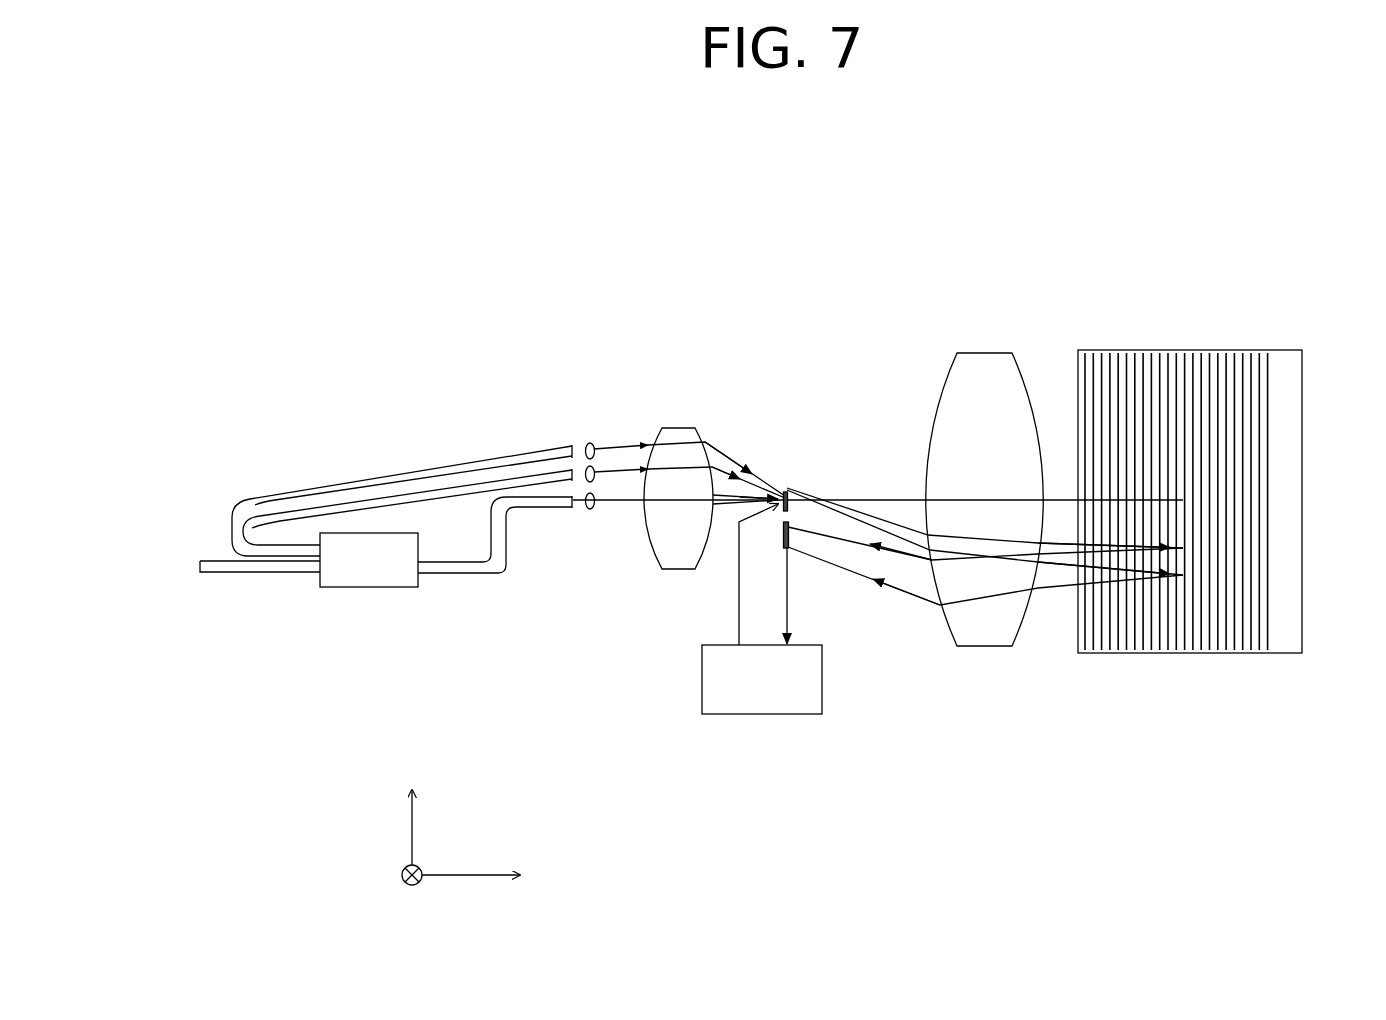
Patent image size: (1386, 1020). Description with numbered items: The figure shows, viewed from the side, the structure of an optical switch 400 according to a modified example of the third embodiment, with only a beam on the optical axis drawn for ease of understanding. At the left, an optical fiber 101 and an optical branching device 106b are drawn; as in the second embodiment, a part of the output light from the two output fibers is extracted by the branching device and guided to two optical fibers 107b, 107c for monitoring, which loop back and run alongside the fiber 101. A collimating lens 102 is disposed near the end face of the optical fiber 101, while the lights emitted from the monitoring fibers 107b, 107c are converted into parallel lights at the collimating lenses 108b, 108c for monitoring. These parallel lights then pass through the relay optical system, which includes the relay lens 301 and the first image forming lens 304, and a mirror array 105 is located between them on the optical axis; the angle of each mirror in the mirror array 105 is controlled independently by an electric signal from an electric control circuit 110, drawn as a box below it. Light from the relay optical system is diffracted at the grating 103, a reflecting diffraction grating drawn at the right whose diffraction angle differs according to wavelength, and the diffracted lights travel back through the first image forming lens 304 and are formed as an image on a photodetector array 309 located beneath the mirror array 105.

The optical switch 400 is at (810, 278).
The optical fiber for monitoring 107c is at (384, 476).
The optical fiber for monitoring 107b is at (484, 481).
The optical fiber 101 is at (545, 509).
The optical branching device 106b is at (363, 588).
The collimating lens for monitoring 108c is at (588, 442).
The collimating lens for monitoring 108b is at (596, 465).
The collimating lens 102 is at (594, 510).
The relay lens 301 is at (675, 428).
The mirror array 105 is at (787, 492).
The photodetector array 309 is at (790, 550).
The electric control circuit 110 is at (782, 717).
The first image forming lens 304 is at (973, 352).
The grating 103 is at (1165, 654).